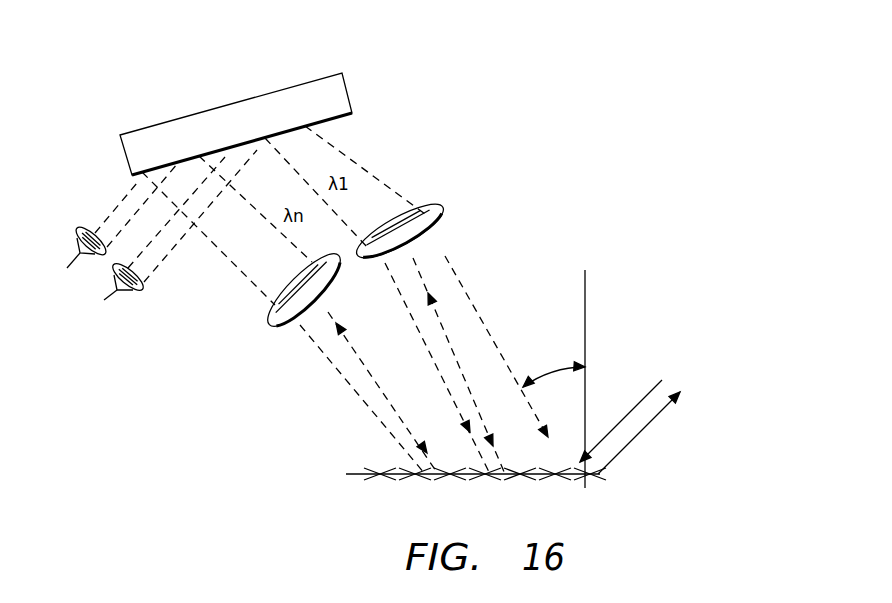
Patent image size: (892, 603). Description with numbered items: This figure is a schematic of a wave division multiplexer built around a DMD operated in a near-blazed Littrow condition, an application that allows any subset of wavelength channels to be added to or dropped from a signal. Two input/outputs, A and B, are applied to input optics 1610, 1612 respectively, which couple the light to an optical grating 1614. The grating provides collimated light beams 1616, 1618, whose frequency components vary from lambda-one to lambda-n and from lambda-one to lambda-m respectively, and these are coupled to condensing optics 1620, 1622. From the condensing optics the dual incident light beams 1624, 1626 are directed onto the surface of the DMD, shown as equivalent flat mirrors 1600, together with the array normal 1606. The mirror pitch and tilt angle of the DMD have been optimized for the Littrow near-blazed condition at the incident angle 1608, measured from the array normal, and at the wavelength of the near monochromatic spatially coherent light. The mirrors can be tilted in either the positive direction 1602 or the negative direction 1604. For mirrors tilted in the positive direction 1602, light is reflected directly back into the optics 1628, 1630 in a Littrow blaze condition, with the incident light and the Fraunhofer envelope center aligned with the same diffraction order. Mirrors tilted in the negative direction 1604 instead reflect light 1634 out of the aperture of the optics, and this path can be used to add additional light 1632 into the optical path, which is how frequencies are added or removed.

The flat mirrors 1600 is at (448, 477).
The positive tilt direction 1602 is at (373, 480).
The negative tilt direction 1604 is at (412, 483).
The array normal 1606 is at (587, 310).
The incident angle 1608 is at (562, 368).
The input optics 1610 is at (78, 231).
The input optics 1612 is at (138, 291).
The optical grating 1614 is at (230, 103).
The collimated light beam 1616 is at (233, 257).
The collimated light beam 1618 is at (393, 189).
The condensing optics 1620 is at (269, 324).
The condensing optics 1622 is at (443, 207).
The incident light beam 1624 is at (307, 336).
The incident light beam 1626 is at (448, 256).
The optics 1628 is at (367, 357).
The optics 1630 is at (445, 308).
The additional light 1632 is at (640, 401).
The reflected light 1634 is at (646, 428).